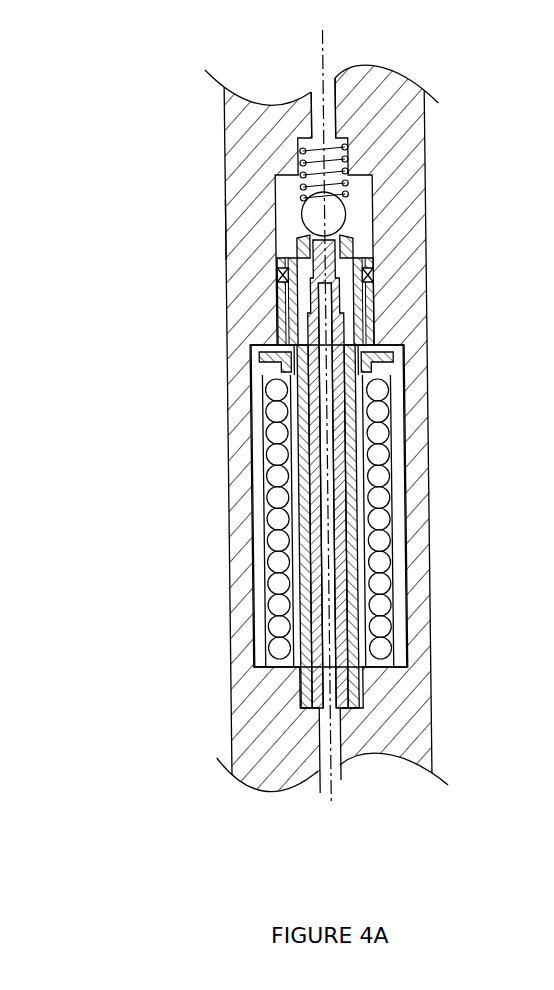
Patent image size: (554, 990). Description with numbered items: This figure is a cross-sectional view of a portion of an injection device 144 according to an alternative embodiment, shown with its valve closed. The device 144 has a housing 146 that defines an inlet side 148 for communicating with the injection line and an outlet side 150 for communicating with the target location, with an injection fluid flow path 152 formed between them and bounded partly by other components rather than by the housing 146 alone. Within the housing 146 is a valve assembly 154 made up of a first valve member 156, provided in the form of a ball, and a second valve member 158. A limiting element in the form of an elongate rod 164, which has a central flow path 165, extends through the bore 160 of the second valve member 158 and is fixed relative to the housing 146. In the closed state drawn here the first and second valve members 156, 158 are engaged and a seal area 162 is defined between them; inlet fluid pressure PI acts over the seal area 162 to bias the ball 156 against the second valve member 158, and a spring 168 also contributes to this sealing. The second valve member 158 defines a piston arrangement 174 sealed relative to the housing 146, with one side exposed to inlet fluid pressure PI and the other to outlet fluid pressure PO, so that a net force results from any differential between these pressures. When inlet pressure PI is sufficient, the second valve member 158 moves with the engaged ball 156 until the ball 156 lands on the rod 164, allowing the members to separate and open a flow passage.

The injection device 144 is at (137, 100).
The housing 146 is at (418, 695).
The inlet side 148 is at (333, 82).
The outlet side 150 is at (340, 767).
The injection fluid flow path 152 is at (340, 105).
The valve assembly 154 is at (205, 235).
The first valve member 156 is at (348, 212).
The second valve member 158 is at (360, 315).
The bore 160 is at (350, 406).
The seal area 162 is at (303, 228).
The elongate rod 164 is at (365, 280).
The central flow path 165 is at (332, 473).
The spring 168 is at (345, 140).
The piston arrangement 174 is at (272, 275).
The inlet fluid pressure PI is at (313, 125).
The outlet fluid pressure PO is at (323, 370).